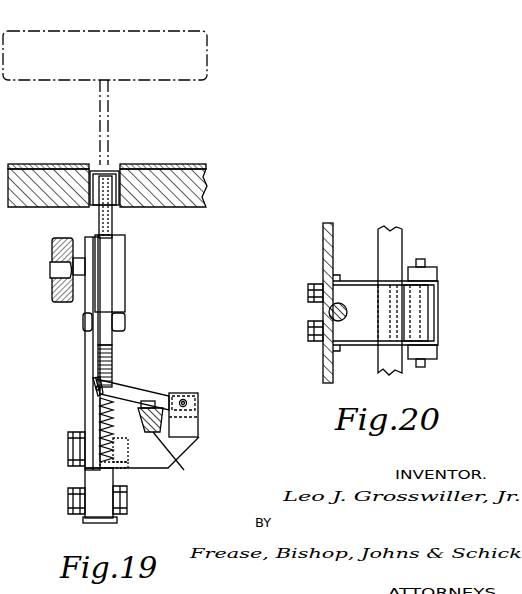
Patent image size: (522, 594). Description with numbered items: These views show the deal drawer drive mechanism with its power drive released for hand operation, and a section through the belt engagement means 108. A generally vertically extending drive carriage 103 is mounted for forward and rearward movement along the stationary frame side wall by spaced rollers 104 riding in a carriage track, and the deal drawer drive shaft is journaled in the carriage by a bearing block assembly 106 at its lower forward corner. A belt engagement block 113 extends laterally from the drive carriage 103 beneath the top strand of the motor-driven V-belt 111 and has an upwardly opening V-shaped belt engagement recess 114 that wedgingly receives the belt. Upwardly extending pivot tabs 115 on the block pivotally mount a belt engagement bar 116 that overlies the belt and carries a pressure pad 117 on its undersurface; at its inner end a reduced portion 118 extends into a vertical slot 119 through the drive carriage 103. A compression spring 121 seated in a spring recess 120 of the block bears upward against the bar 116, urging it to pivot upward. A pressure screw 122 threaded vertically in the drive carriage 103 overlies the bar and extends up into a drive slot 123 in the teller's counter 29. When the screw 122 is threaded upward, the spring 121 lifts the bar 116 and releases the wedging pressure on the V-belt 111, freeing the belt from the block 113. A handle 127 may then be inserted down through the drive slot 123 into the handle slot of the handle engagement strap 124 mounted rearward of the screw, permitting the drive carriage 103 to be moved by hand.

In FIG. 19, the teller's counter 29 is at (196, 167).
In FIG. 19, the drive carriage 103 is at (88, 341).
In FIG. 19, the rollers 104 is at (58, 246).
In FIG. 19, the bearing block assembly 106 is at (106, 524).
In FIG. 19, the V-belt engagement means 108 is at (197, 434).
In FIG. 20, the V-belt engagement means 108 is at (438, 300).
In FIG. 19, the V-belt 111 is at (203, 466).
In FIG. 20, the V-belt 111 is at (398, 233).
In FIG. 19, the belt engagement block 113 is at (144, 468).
In FIG. 20, the belt engagement block 113 is at (438, 320).
In FIG. 19, the belt engagement recess 114 is at (172, 462).
In FIG. 19, the pivot tabs 115 is at (198, 411).
In FIG. 20, the pivot tabs 115 is at (430, 270).
In FIG. 19, the belt engagement bar 116 is at (118, 388).
In FIG. 20, the belt engagement bar 116 is at (366, 338).
In FIG. 19, the pressure pad 117 is at (150, 404).
In FIG. 20, the pressure pad 117 is at (396, 300).
In FIG. 19, the reduced portion 118 is at (92, 381).
In FIG. 20, the reduced portion 118 is at (330, 297).
In FIG. 20, the slot 119 is at (318, 328).
In FIG. 19, the spring recess 120 is at (110, 425).
In FIG. 19, the compression spring 121 is at (100, 404).
In FIG. 19, the pressure screw 122 is at (112, 358).
In FIG. 20, the pressure screw 122 is at (328, 312).
In FIG. 19, the drive slot 123 is at (108, 171).
In FIG. 19, the handle engagement strap 124 is at (106, 266).
In FIG. 19, the handle 127 is at (212, 39).